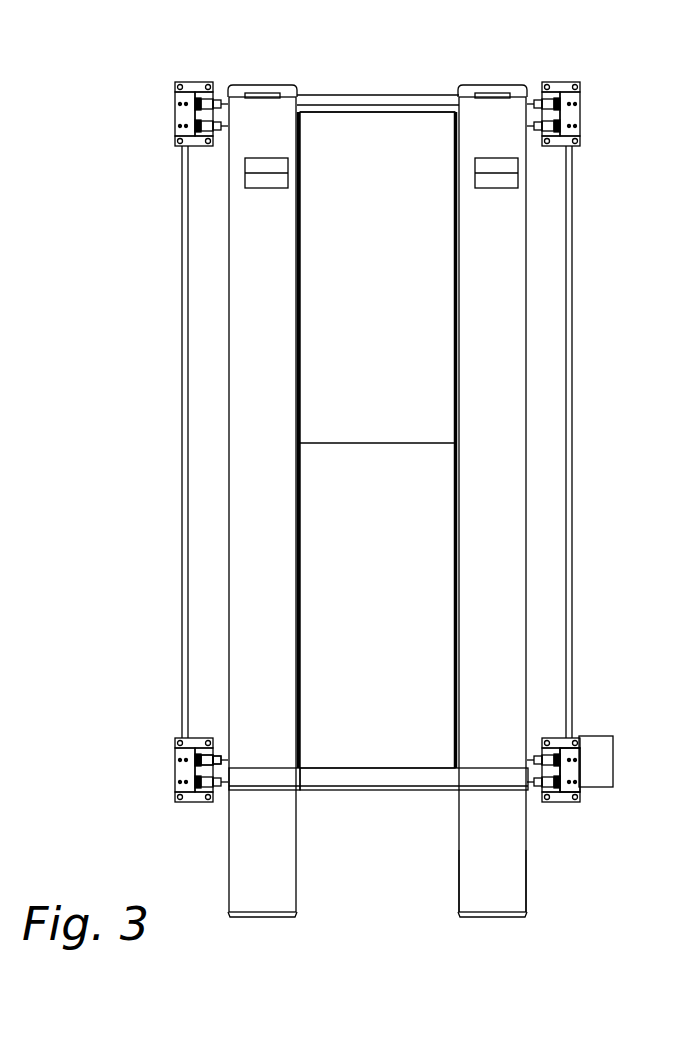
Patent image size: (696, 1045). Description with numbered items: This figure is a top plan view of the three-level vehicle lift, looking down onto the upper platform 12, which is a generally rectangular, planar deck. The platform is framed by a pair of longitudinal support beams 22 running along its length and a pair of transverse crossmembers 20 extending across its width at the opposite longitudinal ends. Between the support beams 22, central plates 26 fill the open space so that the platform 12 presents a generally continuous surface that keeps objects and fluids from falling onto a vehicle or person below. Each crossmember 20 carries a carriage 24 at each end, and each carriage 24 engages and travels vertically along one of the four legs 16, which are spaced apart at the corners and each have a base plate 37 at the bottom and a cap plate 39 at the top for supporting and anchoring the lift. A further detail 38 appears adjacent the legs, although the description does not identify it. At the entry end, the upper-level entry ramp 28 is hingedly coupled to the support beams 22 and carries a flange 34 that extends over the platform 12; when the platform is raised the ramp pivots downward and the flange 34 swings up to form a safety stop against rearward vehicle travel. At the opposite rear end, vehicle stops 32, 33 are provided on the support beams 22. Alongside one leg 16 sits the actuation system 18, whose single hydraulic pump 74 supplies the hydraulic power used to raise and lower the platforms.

The upper platform 12 is at (527, 323).
The leg 16 is at (558, 805).
The actuation system 18 is at (609, 767).
The transverse crossmember 20 is at (413, 100).
The longitudinal support beam 22 is at (297, 487).
The carriage 24 is at (222, 750).
The central plate 26 is at (388, 379).
The upper-level entry ramp 28 is at (460, 875).
The vehicle stop 32 is at (518, 177).
The vehicle stop 33 is at (258, 87).
The flange 34 is at (257, 785).
The base plate 37 is at (192, 803).
The guide rail 38 is at (377, 442).
The cap plate 39 is at (573, 773).
The hydraulic pump 74 is at (614, 770).